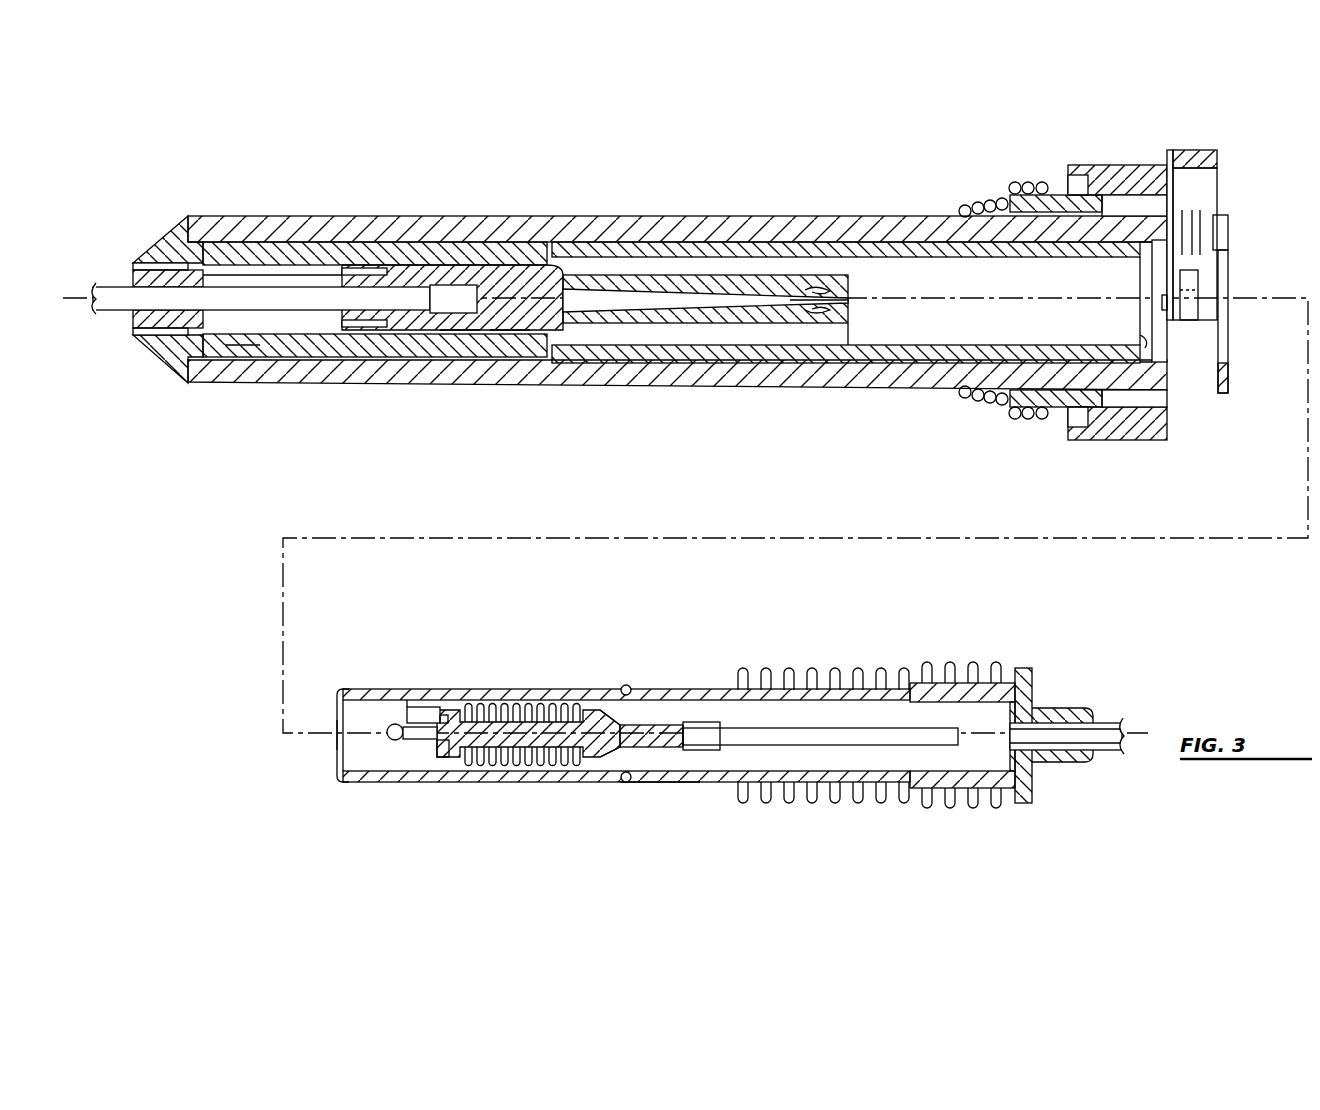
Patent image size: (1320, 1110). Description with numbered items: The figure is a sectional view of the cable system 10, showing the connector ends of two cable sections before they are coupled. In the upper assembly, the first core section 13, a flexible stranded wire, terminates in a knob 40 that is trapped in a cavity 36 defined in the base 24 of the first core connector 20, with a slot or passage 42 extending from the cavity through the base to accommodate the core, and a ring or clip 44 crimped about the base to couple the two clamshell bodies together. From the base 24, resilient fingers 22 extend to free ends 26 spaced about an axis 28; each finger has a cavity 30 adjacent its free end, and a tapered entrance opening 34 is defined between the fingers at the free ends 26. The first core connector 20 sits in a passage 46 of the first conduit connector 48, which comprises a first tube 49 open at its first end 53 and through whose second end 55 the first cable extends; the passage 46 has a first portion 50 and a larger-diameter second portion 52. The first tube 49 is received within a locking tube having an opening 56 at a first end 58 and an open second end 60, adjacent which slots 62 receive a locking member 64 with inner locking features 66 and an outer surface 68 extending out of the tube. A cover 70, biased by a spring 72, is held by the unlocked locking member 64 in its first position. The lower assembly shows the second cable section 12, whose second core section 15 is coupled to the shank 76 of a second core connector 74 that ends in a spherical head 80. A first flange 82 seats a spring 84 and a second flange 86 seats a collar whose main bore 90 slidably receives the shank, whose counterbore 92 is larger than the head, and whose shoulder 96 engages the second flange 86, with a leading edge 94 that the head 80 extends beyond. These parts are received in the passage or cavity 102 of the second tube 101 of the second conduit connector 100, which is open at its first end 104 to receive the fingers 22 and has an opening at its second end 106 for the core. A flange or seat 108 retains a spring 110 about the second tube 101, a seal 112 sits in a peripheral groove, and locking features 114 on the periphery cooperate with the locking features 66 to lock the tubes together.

The cable system 10 is at (828, 78).
The second cable section 12 is at (1100, 755).
The first core section 13 is at (265, 308).
The second core section 15 is at (880, 748).
The first core connector 20 is at (500, 262).
The fingers 22 is at (692, 276).
The base 24 is at (495, 322).
The free end 26 is at (855, 320).
The axis 28 is at (72, 302).
The cavity 30 is at (826, 288).
The entrance opening 34 is at (850, 300).
The connection feature cavity 36 is at (470, 316).
The knob 40 is at (450, 288).
The slot or passage 42 is at (340, 320).
The ring or clip 44 is at (350, 268).
The passage 46 is at (1178, 348).
The first conduit connector 48 is at (580, 198).
The first tube 49 is at (232, 248).
The first portion 50 is at (222, 338).
The second portion 52 is at (572, 345).
The first end 53 is at (1145, 340).
The second end 55 is at (195, 218).
The opening 56 is at (160, 310).
The first end 58 is at (148, 250).
The second end 60 is at (1172, 392).
The slots 62 is at (1208, 222).
The locking member 64 is at (1224, 237).
The locking features 66 is at (1218, 258).
The outer surface 68 is at (1186, 148).
The cover 70 is at (1110, 152).
The spring 72 is at (1042, 185).
The second core connector 74 is at (670, 722).
The shank 76 is at (540, 765).
The head 80 is at (400, 742).
The first flange 82 is at (618, 760).
The spring 84 is at (590, 740).
The second flange 86 is at (448, 748).
The main bore 90 is at (500, 740).
The counterbore 92 is at (440, 708).
The leading end or edge 94 is at (428, 700).
The shoulder 96 is at (440, 740).
The second conduit connector 100 is at (702, 788).
The second tube 101 is at (652, 784).
The passage or cavity 102 is at (340, 752).
The first end 104 is at (333, 740).
The second end 106 is at (1060, 708).
The flange or seat 108 is at (1025, 668).
The spring 110 is at (770, 672).
The seal 112 is at (632, 686).
The locking features 114 is at (895, 672).